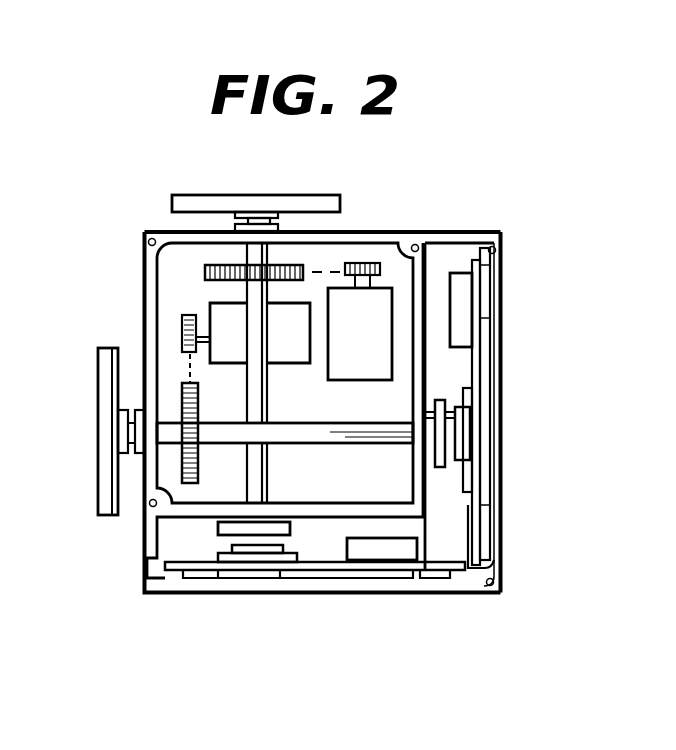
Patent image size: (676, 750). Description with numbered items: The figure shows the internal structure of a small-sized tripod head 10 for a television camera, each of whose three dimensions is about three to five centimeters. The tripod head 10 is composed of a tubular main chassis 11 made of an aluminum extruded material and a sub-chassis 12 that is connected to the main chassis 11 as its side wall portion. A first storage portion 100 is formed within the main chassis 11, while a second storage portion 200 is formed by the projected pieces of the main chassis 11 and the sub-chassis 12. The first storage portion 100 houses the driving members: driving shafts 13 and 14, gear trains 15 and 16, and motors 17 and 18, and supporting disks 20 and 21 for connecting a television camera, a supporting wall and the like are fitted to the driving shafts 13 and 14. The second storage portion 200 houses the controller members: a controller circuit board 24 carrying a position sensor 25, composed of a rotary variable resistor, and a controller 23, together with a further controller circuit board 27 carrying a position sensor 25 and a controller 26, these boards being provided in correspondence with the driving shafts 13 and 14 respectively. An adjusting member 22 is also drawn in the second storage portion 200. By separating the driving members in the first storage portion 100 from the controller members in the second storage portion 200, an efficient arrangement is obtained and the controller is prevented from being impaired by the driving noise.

The tripod head 10 is at (463, 223).
The main chassis 11 is at (398, 230).
The sub-chassis 12 is at (503, 458).
The driving shaft 13 is at (310, 445).
The driving shaft 14 is at (268, 397).
The gear train 15 is at (198, 455).
The gear train 16 is at (205, 268).
The motor 17 is at (300, 346).
The motor 18 is at (368, 345).
The supporting disk 20 is at (98, 474).
The supporting disk 21 is at (256, 194).
The adjusting knob 22 is at (455, 413).
The controller 23 is at (465, 287).
The controller circuit board 24 is at (477, 332).
The position sensor 25 is at (266, 532).
The controller 26 is at (385, 552).
The controller circuit board 27 is at (317, 566).
The first storage portion 100 is at (163, 277).
The second storage portion 200 is at (460, 368).